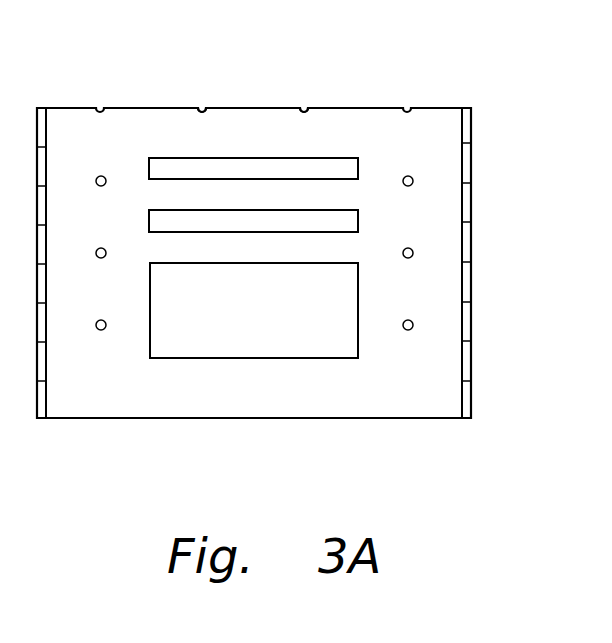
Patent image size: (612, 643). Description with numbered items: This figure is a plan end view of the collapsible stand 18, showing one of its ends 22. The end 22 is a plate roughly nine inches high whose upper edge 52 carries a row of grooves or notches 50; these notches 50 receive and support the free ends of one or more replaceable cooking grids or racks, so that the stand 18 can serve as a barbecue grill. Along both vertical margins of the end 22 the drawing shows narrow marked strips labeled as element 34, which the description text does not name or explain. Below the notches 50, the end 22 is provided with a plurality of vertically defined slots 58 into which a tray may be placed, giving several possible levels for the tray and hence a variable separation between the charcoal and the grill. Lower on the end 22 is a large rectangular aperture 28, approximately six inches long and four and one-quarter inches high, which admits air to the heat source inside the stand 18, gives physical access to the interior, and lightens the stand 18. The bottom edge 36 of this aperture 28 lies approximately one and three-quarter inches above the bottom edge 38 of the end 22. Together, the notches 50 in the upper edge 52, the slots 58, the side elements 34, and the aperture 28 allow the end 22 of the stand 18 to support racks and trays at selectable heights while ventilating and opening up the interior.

The collapsible stand 18 is at (289, 242).
The end 22 is at (86, 405).
The rectangular aperture 28 is at (151, 311).
The side rails 34 is at (44, 107).
The bottom edge 36 is at (262, 358).
The bottom edge 38 is at (395, 418).
The notches 50 is at (202, 108).
The upper edge 52 is at (363, 107).
The slots 58 is at (349, 221).